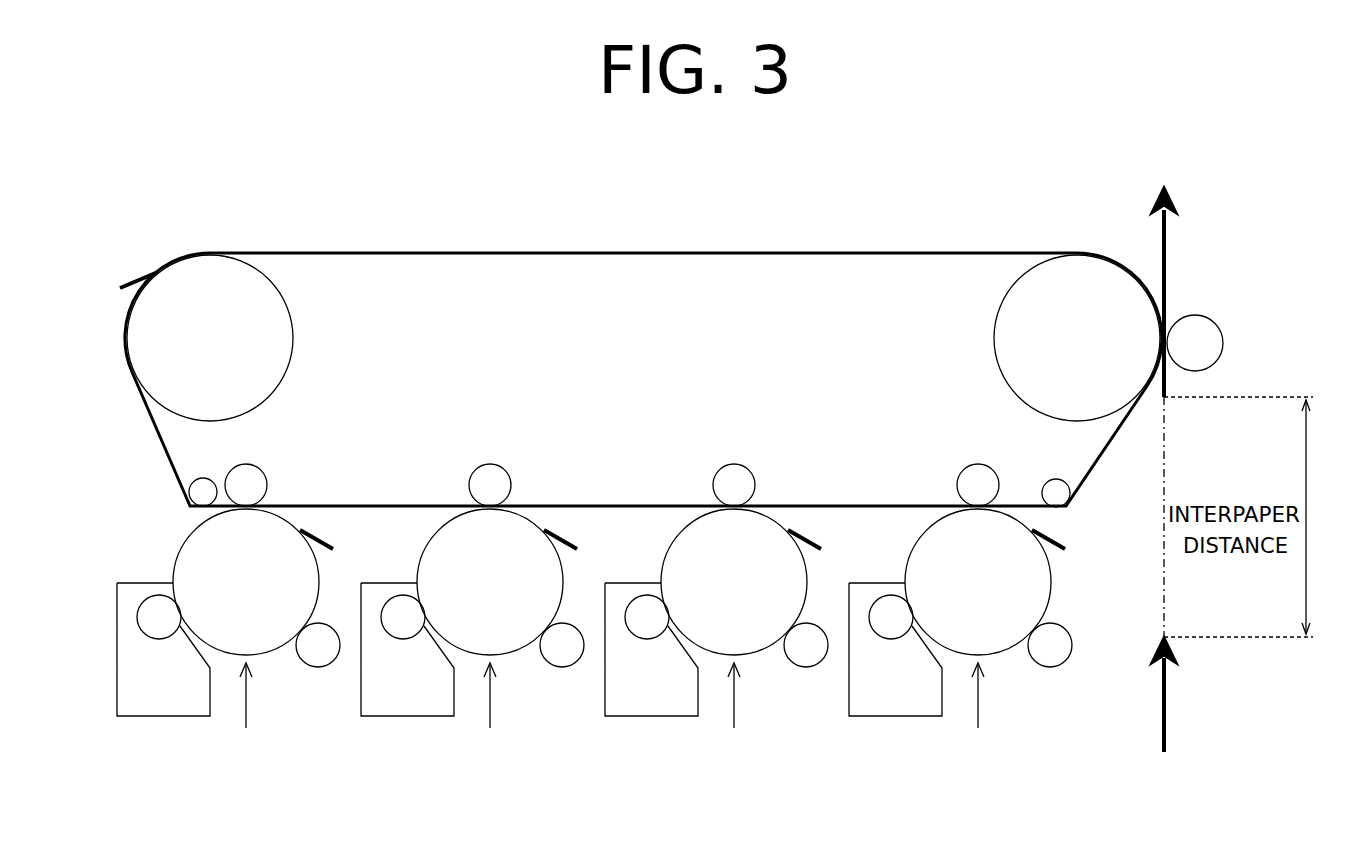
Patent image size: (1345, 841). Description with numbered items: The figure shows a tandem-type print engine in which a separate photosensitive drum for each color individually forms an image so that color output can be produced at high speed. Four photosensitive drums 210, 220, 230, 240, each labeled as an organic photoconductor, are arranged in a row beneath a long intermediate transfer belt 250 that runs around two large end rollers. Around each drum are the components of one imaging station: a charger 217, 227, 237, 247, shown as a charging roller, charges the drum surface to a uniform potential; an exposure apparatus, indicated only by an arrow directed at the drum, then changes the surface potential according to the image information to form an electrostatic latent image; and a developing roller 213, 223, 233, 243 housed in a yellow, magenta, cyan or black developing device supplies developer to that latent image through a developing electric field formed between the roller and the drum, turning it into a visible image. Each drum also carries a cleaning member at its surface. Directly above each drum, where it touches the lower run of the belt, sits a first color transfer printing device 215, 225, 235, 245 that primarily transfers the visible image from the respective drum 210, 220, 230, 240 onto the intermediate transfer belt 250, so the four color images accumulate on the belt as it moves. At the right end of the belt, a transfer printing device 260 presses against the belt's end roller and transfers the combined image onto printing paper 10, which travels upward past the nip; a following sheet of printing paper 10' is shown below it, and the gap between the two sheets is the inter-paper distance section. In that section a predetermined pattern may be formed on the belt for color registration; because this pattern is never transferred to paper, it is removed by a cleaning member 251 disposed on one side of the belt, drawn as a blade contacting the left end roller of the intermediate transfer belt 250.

The printing paper 10 is at (1197, 291).
The printing paper 10' is at (1197, 700).
The photosensitive drum 210 is at (277, 648).
The developing roller 213 is at (172, 639).
The color transfer printing device 215 is at (269, 487).
The charger 217 is at (317, 667).
The photosensitive drum 220 is at (521, 648).
The developing roller 223 is at (416, 639).
The color transfer printing device 225 is at (513, 487).
The charger 227 is at (561, 667).
The photosensitive drum 230 is at (765, 648).
The developing roller 233 is at (660, 639).
The color transfer printing device 235 is at (757, 487).
The charger 237 is at (805, 667).
The photosensitive drum 240 is at (1009, 648).
The developing roller 243 is at (904, 639).
The color transfer printing device 245 is at (957, 485).
The charger 247 is at (1049, 667).
The intermediate transfer belt 250 is at (865, 252).
The cleaning member 251 is at (150, 275).
The transfer printing device 260 is at (1195, 315).